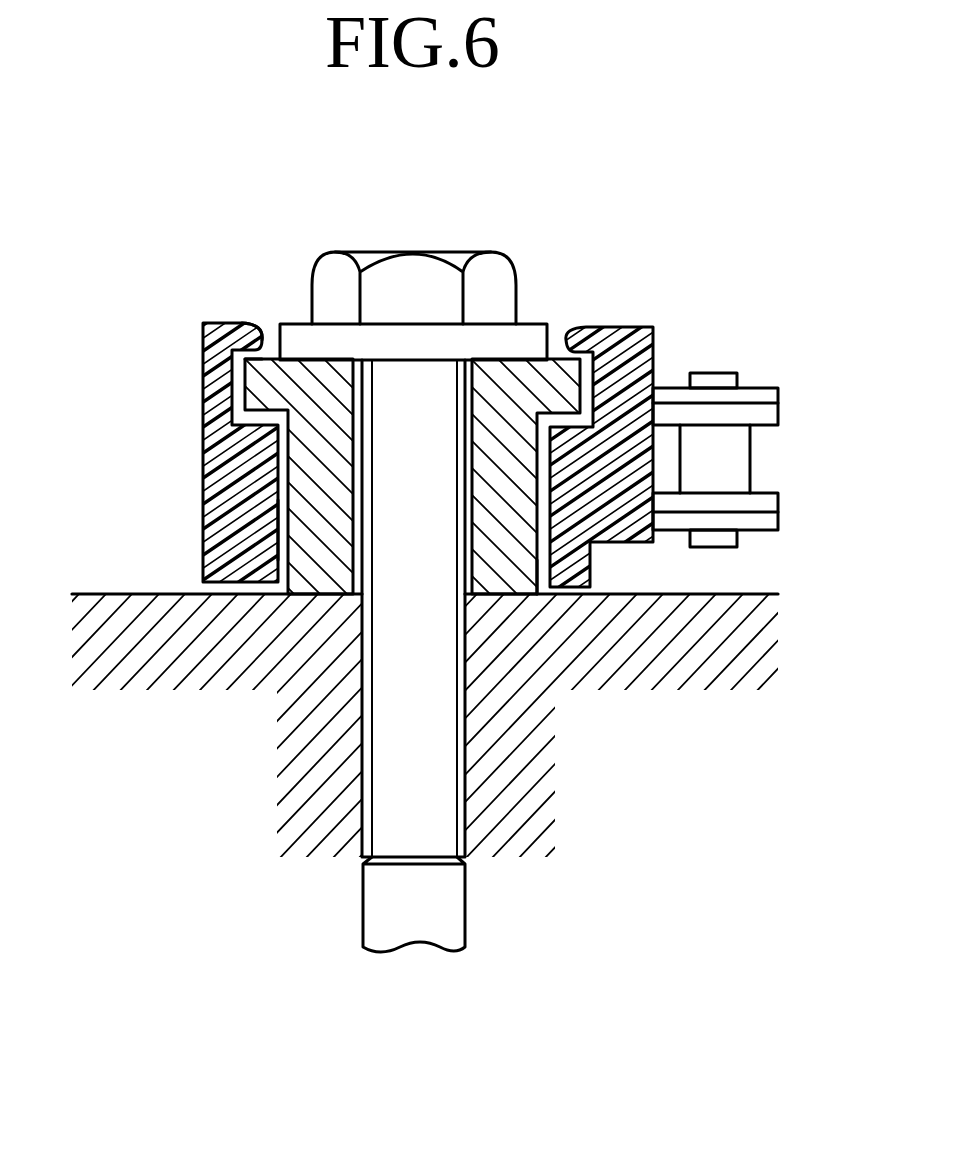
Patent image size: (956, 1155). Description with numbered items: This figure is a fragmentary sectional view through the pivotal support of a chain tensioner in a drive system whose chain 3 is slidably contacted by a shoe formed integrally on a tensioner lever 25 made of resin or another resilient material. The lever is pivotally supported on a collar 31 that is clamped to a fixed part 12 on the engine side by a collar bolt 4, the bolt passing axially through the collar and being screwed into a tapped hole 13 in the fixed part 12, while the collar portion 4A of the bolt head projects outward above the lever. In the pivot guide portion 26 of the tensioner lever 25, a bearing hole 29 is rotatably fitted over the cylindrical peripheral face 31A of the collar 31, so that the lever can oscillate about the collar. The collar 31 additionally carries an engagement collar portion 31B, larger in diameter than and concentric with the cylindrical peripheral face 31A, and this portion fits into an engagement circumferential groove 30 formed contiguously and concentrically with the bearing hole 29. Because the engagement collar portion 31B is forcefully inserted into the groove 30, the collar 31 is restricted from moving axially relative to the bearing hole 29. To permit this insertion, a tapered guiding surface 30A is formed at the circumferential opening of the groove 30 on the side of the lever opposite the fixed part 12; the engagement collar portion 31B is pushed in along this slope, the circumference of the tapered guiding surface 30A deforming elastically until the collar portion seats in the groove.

The chain 3 is at (742, 472).
The collar bolt 4 is at (510, 244).
The collar portion 4A is at (530, 337).
The fixed part 12 is at (720, 594).
The tapped hole 13 is at (467, 910).
The tensioner lever 25 is at (633, 353).
The pivot guide portion 26 is at (178, 443).
The bearing hole 29 is at (282, 518).
The engagement circumferential groove 30 is at (240, 397).
The tapered guiding surface 30A is at (257, 323).
The collar 31 is at (505, 594).
The cylindrical peripheral face 31A is at (552, 594).
The engagement collar portion 31B is at (240, 358).